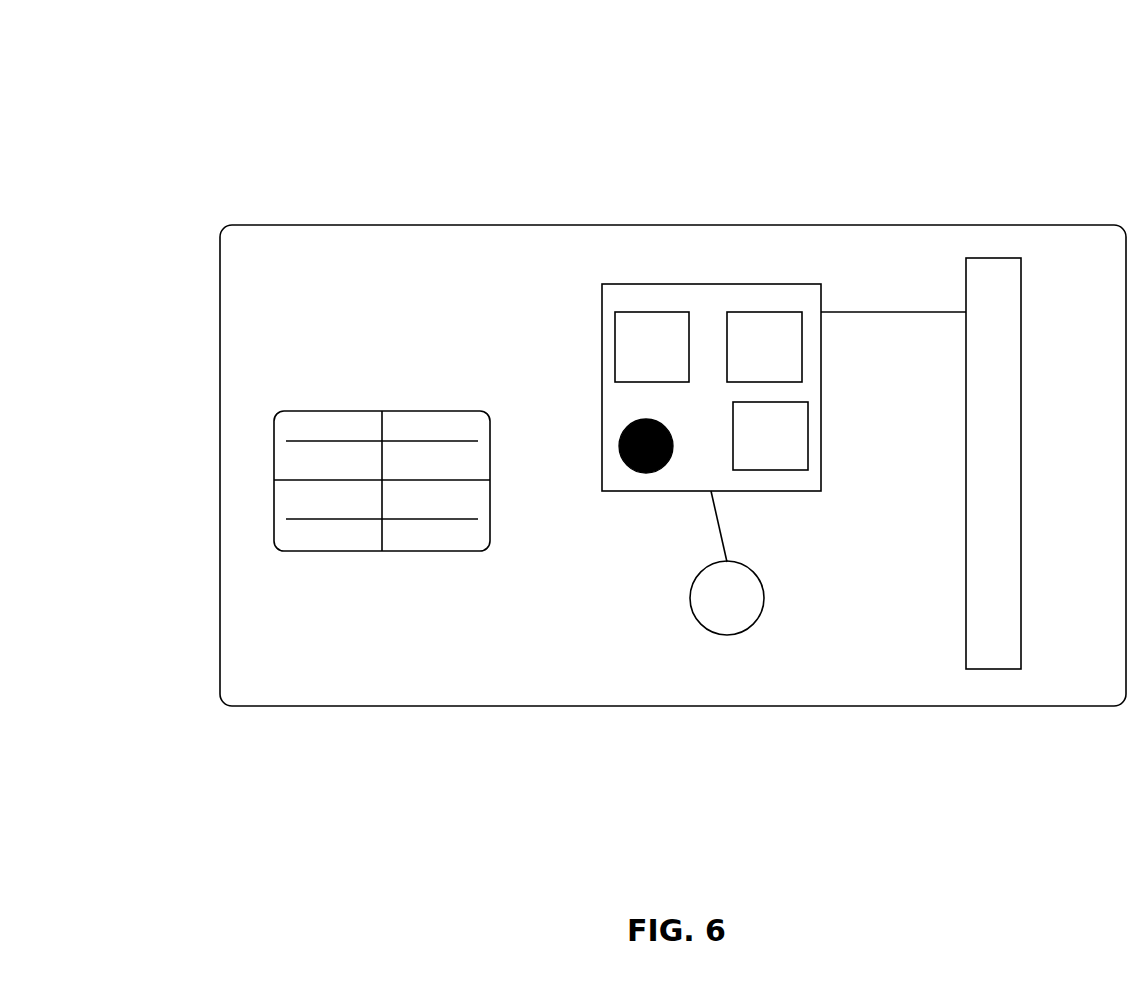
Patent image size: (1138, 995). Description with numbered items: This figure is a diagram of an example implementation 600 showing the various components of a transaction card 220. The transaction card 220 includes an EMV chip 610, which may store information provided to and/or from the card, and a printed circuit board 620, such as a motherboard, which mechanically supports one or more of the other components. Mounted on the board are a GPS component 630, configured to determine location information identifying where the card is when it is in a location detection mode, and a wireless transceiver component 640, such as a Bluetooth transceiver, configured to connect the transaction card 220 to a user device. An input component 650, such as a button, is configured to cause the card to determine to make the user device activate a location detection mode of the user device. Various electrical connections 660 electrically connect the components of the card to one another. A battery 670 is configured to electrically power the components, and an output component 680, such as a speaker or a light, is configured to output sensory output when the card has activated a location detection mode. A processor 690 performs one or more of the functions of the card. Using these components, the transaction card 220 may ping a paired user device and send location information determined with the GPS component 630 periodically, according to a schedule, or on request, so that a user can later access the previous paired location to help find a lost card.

The example implementation 600 is at (125, 44).
The transaction card 220 is at (673, 485).
The EMV chip 610 is at (321, 411).
The printed circuit board 620 is at (601, 329).
The GPS component 630 is at (619, 365).
The wireless transceiver component 640 is at (762, 320).
The input component 650 is at (620, 440).
The electrical connections 660 is at (905, 311).
The battery 670 is at (976, 418).
The output component 680 is at (745, 566).
The processor 690 is at (797, 453).